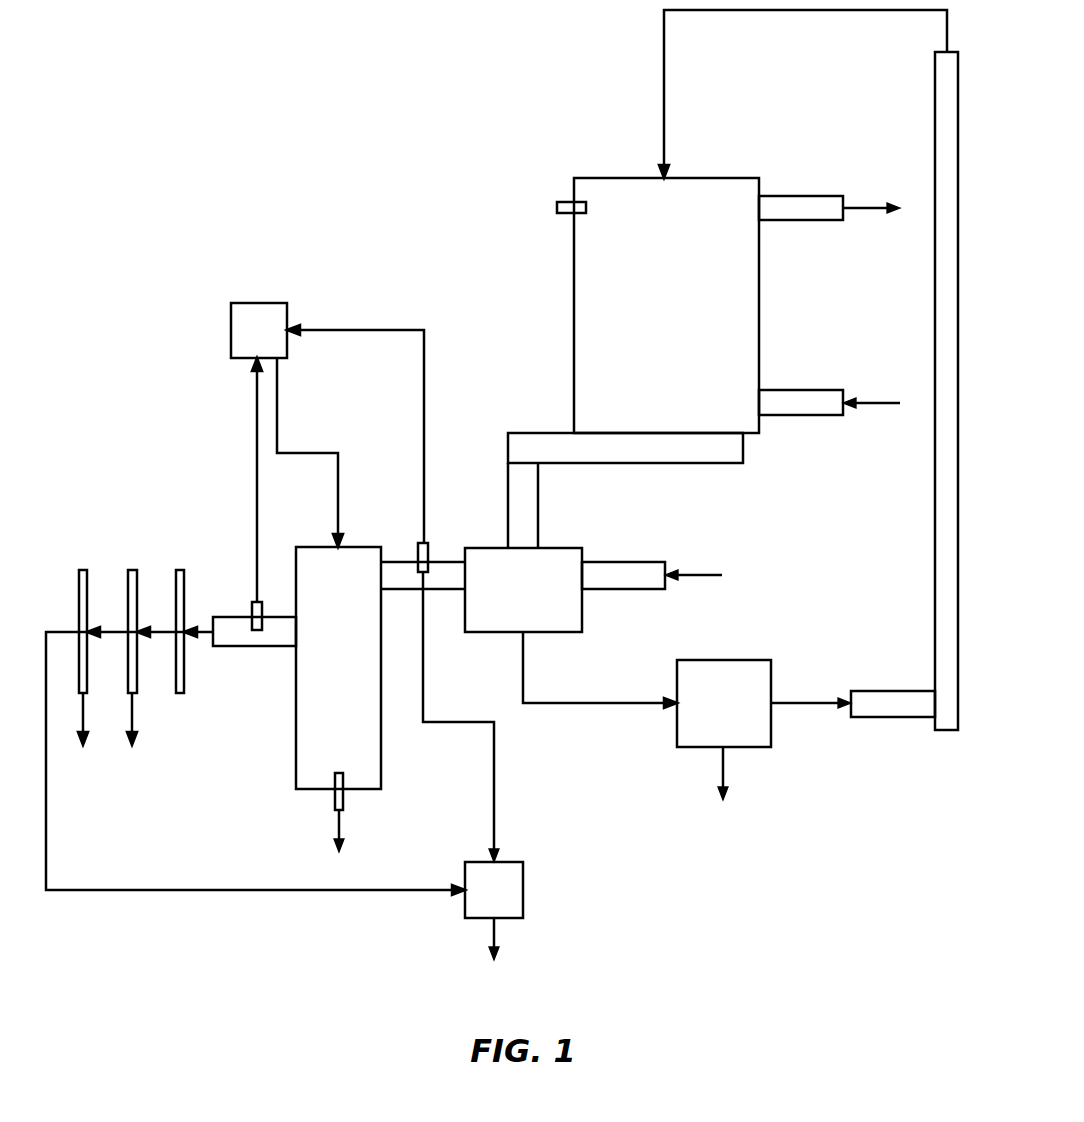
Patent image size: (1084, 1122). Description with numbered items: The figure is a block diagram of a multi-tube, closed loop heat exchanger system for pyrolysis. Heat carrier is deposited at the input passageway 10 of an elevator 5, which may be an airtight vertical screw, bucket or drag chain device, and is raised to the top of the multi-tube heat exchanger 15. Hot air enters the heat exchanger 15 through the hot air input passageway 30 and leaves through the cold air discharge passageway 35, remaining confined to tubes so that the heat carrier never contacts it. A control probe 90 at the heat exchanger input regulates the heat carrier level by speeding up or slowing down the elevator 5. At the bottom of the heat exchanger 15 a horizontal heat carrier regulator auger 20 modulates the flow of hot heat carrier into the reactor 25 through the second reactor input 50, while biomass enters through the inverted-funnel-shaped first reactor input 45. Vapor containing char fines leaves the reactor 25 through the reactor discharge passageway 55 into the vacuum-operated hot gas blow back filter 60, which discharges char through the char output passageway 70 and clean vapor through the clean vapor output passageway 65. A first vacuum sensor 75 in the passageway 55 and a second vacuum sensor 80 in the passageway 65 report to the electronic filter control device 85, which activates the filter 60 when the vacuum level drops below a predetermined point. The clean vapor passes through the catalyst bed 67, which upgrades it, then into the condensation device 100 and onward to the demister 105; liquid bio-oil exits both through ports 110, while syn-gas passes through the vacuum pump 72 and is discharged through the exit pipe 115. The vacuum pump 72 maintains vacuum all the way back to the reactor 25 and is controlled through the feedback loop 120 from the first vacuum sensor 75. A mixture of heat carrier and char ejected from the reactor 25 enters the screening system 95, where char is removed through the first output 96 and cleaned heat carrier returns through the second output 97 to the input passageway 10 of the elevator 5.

The elevator 5 is at (935, 148).
The input passageway 10 is at (912, 691).
The multi-tube heat exchanger 15 is at (633, 178).
The heat carrier regulator auger 20 is at (667, 463).
The reactor 25 is at (582, 605).
The hot air input passageway 30 is at (781, 390).
The cold air discharge passageway 35 is at (783, 196).
The first reactor input 45 is at (627, 562).
The second reactor input 50 is at (538, 480).
The reactor discharge passageway 55 is at (388, 592).
The vacuum-operated hot gas blow back filter 60 is at (296, 720).
The clean vapor output passageway 65 is at (262, 646).
The catalyst bed 67 is at (180, 570).
The char output passageway 70 is at (343, 795).
The vacuum pump 72 is at (523, 898).
The first vacuum sensor 75 is at (418, 545).
The second vacuum sensor 80 is at (252, 610).
The electronic filter control device 85 is at (262, 303).
The control probe 90 is at (557, 208).
The screening system 95 is at (771, 730).
The first output 96 is at (723, 765).
The second output 97 is at (805, 705).
The condensation device 100 is at (131, 570).
The demister 105 is at (83, 570).
The ports 110 is at (83, 715).
The exit pipe 115 is at (494, 928).
The feedback loop 120 is at (423, 752).